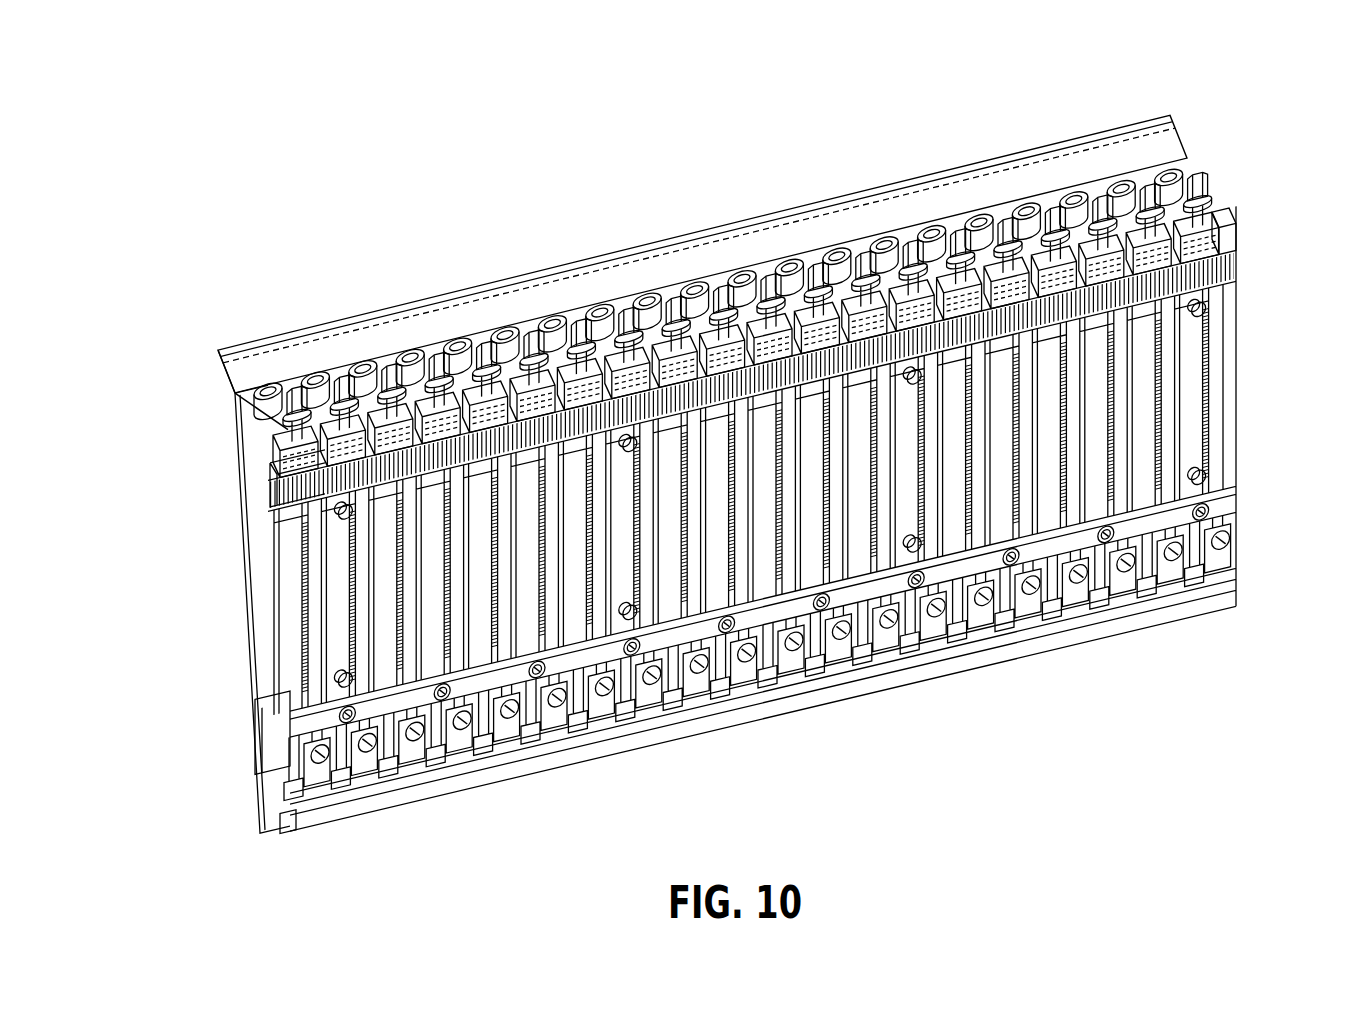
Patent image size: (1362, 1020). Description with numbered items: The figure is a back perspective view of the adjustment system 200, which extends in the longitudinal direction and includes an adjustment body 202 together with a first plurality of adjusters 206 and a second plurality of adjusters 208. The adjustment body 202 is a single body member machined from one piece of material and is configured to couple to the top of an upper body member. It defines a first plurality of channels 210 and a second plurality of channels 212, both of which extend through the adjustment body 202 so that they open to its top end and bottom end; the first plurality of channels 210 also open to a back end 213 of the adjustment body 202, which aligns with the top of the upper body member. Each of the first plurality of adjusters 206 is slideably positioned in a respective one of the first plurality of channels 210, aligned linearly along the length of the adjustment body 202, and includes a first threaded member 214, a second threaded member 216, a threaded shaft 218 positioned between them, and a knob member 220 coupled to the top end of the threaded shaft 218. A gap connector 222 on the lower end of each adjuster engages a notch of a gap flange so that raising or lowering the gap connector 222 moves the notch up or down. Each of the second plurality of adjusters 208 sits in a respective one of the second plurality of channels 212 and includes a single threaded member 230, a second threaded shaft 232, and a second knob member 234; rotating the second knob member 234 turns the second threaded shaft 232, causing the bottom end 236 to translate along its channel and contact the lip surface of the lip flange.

The adjustment system 200 is at (1152, 80).
The adjustment body 202 is at (266, 648).
The first plurality of adjusters 206 is at (1082, 190).
The second plurality of adjusters 208 is at (352, 355).
The first plurality of channels 210 is at (429, 580).
The second plurality of channels 212 is at (244, 399).
The back end 213 is at (289, 612).
The first threaded member 214 is at (1232, 270).
The second threaded member 216 is at (1215, 380).
The threaded shaft 218 is at (1215, 300).
The knob member 220 is at (1217, 184).
The gap connector 222 is at (1238, 585).
The single threaded member 230 is at (261, 726).
The second threaded shaft 232 is at (271, 789).
The bottom end 236 is at (289, 828).
The second knob member 234 is at (246, 390).